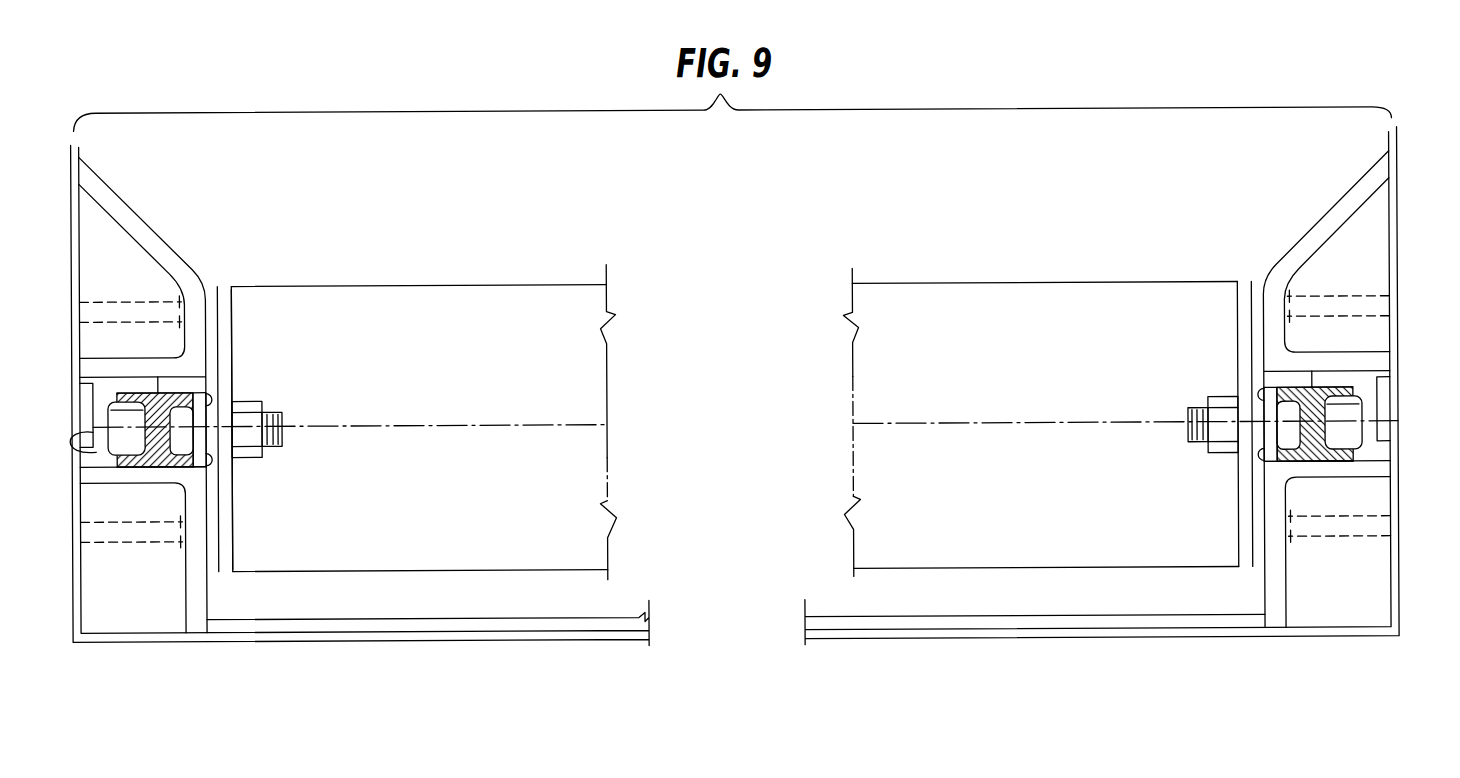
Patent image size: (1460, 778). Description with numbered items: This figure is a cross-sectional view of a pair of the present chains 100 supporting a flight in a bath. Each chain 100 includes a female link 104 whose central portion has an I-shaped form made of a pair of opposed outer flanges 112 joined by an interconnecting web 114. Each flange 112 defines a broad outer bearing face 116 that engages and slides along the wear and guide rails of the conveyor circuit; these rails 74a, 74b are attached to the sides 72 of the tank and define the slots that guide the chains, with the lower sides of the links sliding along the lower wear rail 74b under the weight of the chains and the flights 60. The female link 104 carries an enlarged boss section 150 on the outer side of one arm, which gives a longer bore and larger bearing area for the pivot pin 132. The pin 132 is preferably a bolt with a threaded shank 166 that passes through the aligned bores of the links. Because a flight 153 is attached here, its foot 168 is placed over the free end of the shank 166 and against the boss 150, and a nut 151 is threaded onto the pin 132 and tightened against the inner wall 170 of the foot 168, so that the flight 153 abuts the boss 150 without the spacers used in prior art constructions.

The flight 60 is at (562, 323).
The side of tank 72 is at (72, 545).
The wear and guide rail 74a is at (118, 205).
The lower wear rail 74b is at (192, 603).
The chain 100 is at (172, 467).
The female link 104 is at (143, 393).
The outer flange 112 is at (163, 405).
The web 114 is at (193, 398).
The bearing face 116 is at (1327, 466).
The pivot pin 132 is at (282, 410).
The boss section 150 is at (215, 401).
The nut 151 is at (250, 456).
The flight 153 is at (524, 286).
The threaded shank 166 is at (278, 444).
The foot 168 is at (224, 287).
The inner wall 170 is at (236, 325).